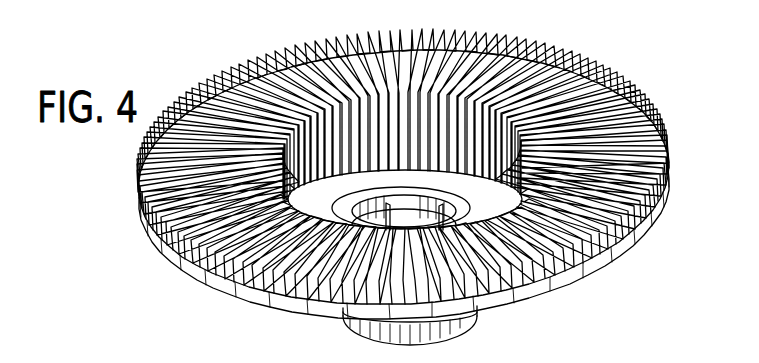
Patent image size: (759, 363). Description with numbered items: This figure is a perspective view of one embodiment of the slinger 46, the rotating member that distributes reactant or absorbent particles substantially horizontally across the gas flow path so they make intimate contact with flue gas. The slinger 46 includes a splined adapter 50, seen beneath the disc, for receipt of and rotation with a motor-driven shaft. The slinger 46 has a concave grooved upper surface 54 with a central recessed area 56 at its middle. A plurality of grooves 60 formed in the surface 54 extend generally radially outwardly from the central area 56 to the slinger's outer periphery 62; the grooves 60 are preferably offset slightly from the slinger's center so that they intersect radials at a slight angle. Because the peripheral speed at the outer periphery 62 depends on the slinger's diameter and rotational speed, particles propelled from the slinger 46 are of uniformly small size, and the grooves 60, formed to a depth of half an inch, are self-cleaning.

The slinger 46 is at (636, 72).
The splined adapter 50 is at (358, 330).
The concave grooved upper surface 54 is at (215, 169).
The central recessed area 56 is at (498, 181).
The grooves 60 is at (503, 48).
The outer periphery 62 is at (555, 275).